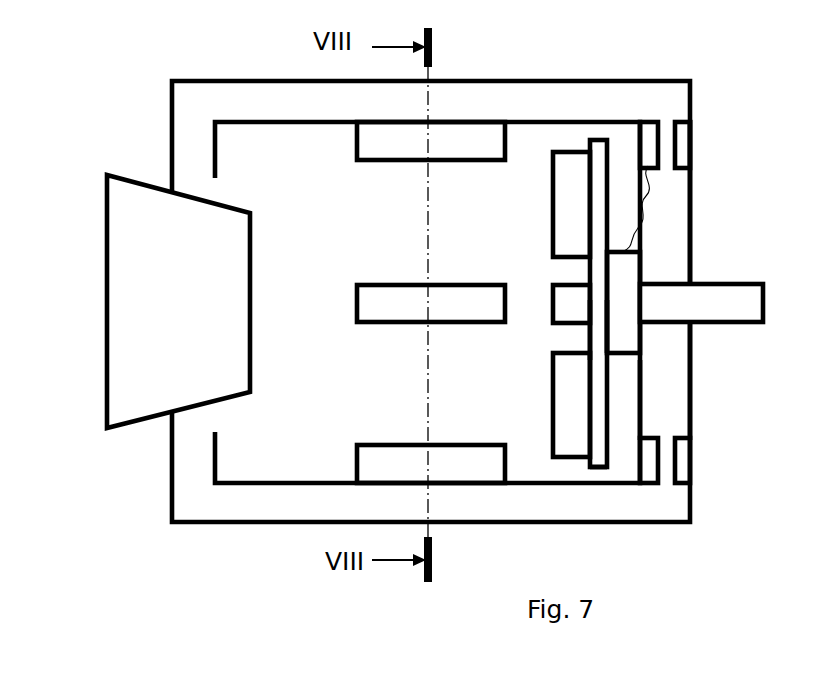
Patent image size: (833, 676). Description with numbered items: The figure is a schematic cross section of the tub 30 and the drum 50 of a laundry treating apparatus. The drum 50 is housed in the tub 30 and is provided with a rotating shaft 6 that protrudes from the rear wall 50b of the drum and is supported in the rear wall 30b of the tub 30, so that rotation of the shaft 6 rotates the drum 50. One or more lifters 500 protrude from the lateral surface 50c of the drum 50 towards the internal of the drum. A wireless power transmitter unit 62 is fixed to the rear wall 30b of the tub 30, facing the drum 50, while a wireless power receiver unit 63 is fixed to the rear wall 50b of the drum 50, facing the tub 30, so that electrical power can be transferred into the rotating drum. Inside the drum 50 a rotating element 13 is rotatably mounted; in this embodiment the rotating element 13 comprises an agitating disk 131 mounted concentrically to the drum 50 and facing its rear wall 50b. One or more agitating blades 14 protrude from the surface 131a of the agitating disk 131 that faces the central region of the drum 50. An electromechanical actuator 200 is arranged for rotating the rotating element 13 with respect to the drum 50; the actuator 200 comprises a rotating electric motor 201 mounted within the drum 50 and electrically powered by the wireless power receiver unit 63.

The tub 30 is at (635, 81).
The rear wall of the tub 30b is at (692, 258).
The drum 50 is at (286, 121).
The rear wall of the drum 50b is at (643, 405).
The lateral surface of the drum 50c is at (328, 127).
The lifters 500 is at (392, 147).
The rotating shaft 6 is at (745, 302).
The wireless power transmitter unit 62 is at (682, 142).
The wireless power receiver unit 63 is at (643, 130).
The rotating element 13 is at (597, 188).
The agitating disk 131 is at (597, 448).
The surface of the agitating disk 131a is at (582, 338).
The agitating blades 14 is at (567, 225).
The electromechanical actuator 200 is at (654, 252).
The rotating electric motor 201 is at (637, 340).